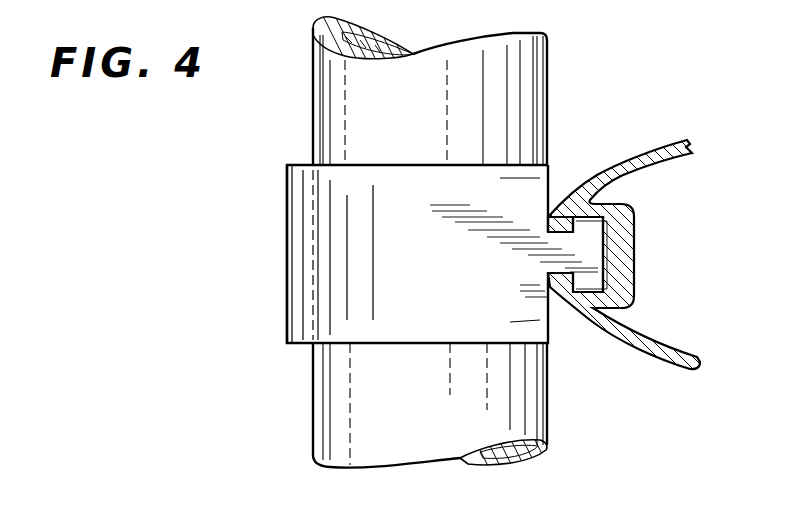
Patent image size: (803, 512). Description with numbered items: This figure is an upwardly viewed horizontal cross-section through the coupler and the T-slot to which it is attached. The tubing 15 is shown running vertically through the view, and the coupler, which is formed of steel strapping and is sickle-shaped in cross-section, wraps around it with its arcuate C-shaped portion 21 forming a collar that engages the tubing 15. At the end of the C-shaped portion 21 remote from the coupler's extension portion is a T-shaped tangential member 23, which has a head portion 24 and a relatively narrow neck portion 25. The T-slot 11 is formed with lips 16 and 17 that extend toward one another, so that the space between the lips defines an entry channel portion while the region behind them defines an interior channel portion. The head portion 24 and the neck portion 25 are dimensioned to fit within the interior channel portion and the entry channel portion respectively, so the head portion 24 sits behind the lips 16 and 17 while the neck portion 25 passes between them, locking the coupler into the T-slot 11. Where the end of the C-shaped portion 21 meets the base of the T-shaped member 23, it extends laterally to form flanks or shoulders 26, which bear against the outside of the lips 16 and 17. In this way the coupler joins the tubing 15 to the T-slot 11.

The T-slot 11 is at (647, 283).
The tubing 15 is at (548, 72).
The lip 16 is at (565, 286).
The lip 17 is at (553, 218).
The C-shaped portion 21 is at (295, 166).
The T-shaped tangential member 23 is at (444, 284).
The head portion 24 is at (593, 256).
The neck portion 25 is at (545, 264).
The shoulders 26 is at (500, 178).